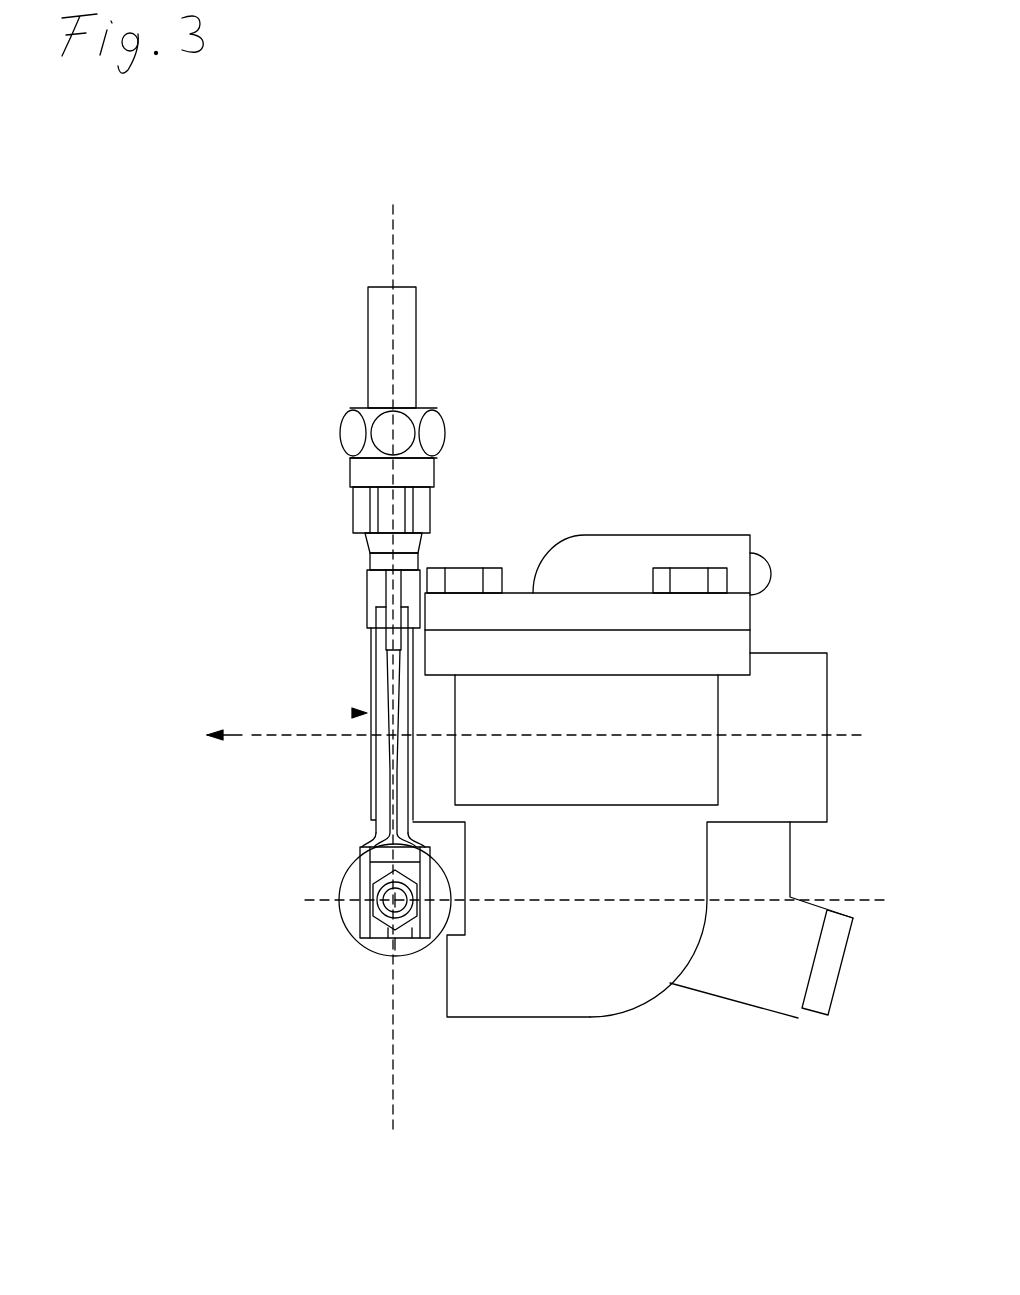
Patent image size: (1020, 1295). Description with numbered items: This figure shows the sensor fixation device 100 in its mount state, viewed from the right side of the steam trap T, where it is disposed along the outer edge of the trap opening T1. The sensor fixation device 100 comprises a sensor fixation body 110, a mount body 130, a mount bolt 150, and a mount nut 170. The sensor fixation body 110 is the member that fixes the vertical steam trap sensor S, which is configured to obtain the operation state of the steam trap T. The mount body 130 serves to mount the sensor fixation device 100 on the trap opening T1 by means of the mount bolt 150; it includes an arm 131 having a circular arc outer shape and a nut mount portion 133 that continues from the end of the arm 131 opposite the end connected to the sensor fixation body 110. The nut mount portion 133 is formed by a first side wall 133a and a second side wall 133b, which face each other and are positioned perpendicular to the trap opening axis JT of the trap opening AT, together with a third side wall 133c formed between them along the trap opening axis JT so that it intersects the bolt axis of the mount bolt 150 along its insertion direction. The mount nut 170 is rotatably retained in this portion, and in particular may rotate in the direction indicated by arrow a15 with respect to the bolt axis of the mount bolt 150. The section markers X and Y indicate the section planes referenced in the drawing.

The sensor fixation device 100 is at (285, 427).
The sensor fixation body 110 is at (368, 593).
The mount body 130 is at (127, 833).
The arm 131 is at (393, 777).
The nut mount portion 133 is at (186, 944).
The first side wall 133a is at (410, 920).
The second side wall 133b is at (447, 905).
The third side wall 133c is at (430, 937).
The arrow indicating rotation direction of the mount nut a15 is at (363, 940).
The mount bolt 150 is at (440, 875).
The mount nut 170 is at (418, 895).
The steam trap sensor S is at (427, 473).
The steam trap T is at (665, 547).
The trap opening T1 is at (432, 745).
The trap opening AT is at (354, 713).
The trap opening axis JT is at (258, 733).
The X section axis X is at (390, 233).
The Y section axis Y is at (309, 901).